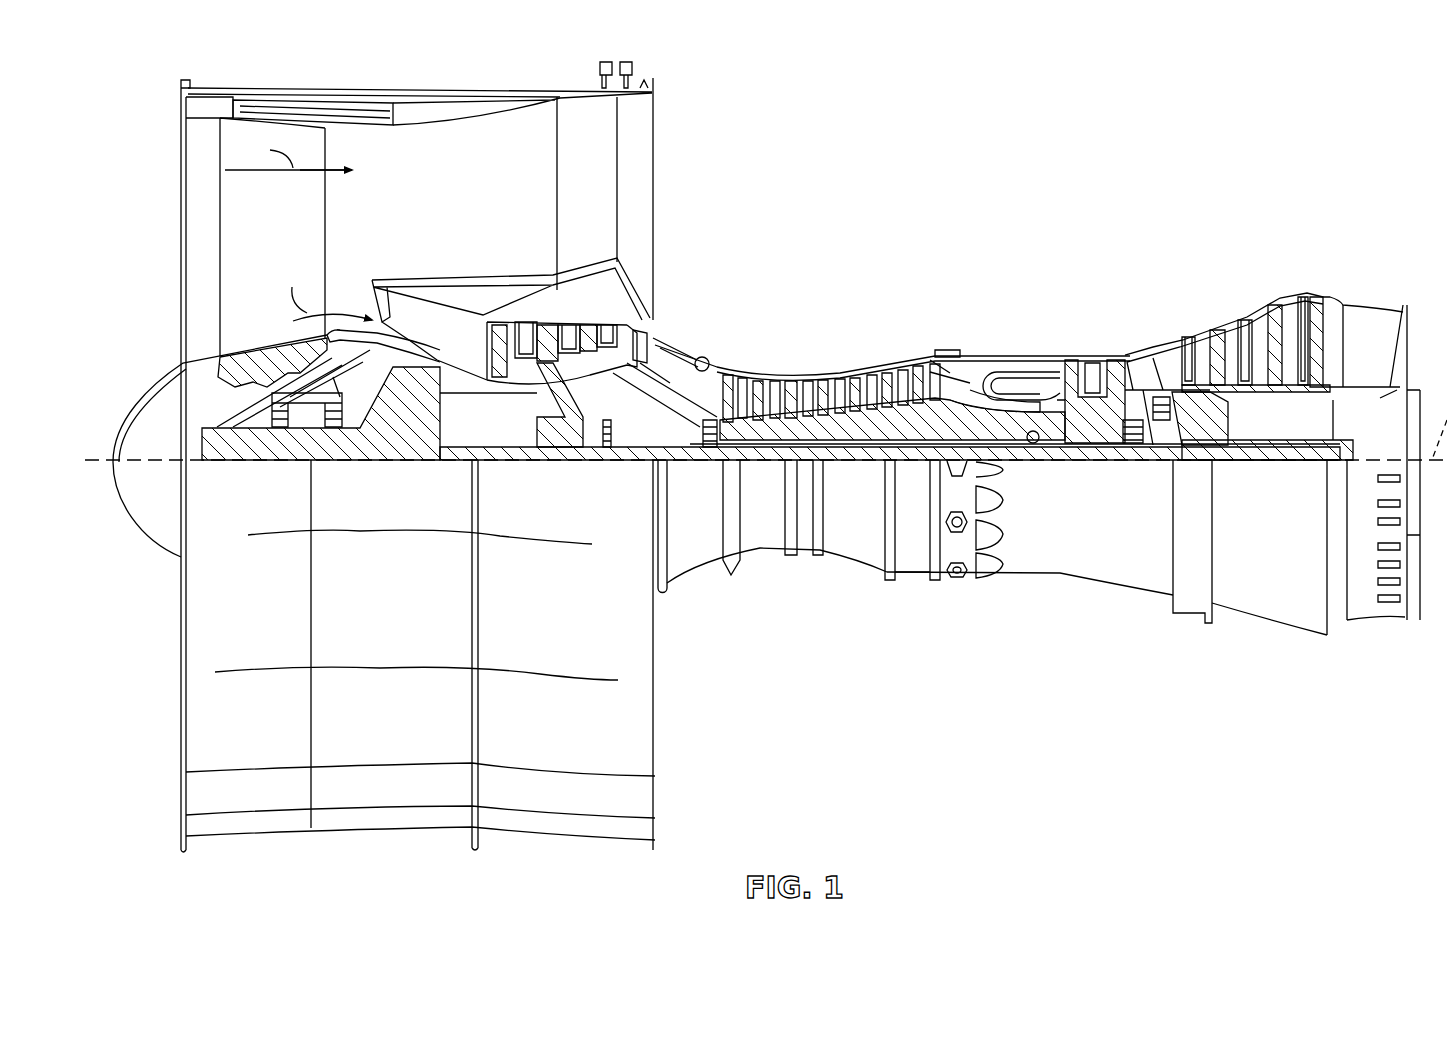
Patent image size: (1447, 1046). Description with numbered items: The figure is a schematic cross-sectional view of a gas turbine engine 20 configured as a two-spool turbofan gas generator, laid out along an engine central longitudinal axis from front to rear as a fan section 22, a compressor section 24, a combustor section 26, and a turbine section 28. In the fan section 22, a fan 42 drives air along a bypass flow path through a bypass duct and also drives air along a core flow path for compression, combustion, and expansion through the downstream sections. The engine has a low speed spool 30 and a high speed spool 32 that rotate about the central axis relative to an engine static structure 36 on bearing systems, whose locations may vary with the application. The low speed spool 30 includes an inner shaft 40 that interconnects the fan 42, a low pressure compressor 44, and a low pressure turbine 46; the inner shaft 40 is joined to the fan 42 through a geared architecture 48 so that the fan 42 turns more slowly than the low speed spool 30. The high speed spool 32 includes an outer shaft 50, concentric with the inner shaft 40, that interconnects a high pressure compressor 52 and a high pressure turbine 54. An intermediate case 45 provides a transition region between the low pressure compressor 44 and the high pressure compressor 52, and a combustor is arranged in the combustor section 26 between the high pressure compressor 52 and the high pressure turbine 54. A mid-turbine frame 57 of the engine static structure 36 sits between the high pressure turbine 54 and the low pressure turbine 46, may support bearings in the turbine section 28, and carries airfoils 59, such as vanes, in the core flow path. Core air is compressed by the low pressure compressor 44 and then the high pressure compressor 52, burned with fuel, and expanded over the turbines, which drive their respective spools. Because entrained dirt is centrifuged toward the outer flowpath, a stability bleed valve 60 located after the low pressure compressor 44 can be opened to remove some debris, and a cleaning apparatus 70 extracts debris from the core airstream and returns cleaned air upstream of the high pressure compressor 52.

The gas turbine engine 20 is at (766, 440).
The fan section 22 is at (262, 70).
The compressor section 24 is at (892, 343).
The combustor section 26 is at (1020, 344).
The turbine section 28 is at (1271, 381).
The low speed spool 30 is at (876, 462).
The high speed spool 32 is at (923, 407).
The engine static structure 36 is at (915, 580).
The inner shaft 40 is at (668, 457).
The fan 42 is at (296, 210).
The low pressure compressor 44 is at (567, 337).
The intermediate case 45 is at (673, 367).
The low pressure turbine 46 is at (1265, 318).
The geared architecture 48 is at (425, 432).
The outer shaft 50 is at (1048, 448).
The high pressure compressor 52 is at (838, 428).
The high pressure turbine 54 is at (1090, 360).
The mid-turbine frame 57 is at (1165, 343).
The airfoils 59 is at (1160, 380).
The stability bleed valve 60 is at (655, 330).
The cleaning apparatus 70 is at (703, 355).